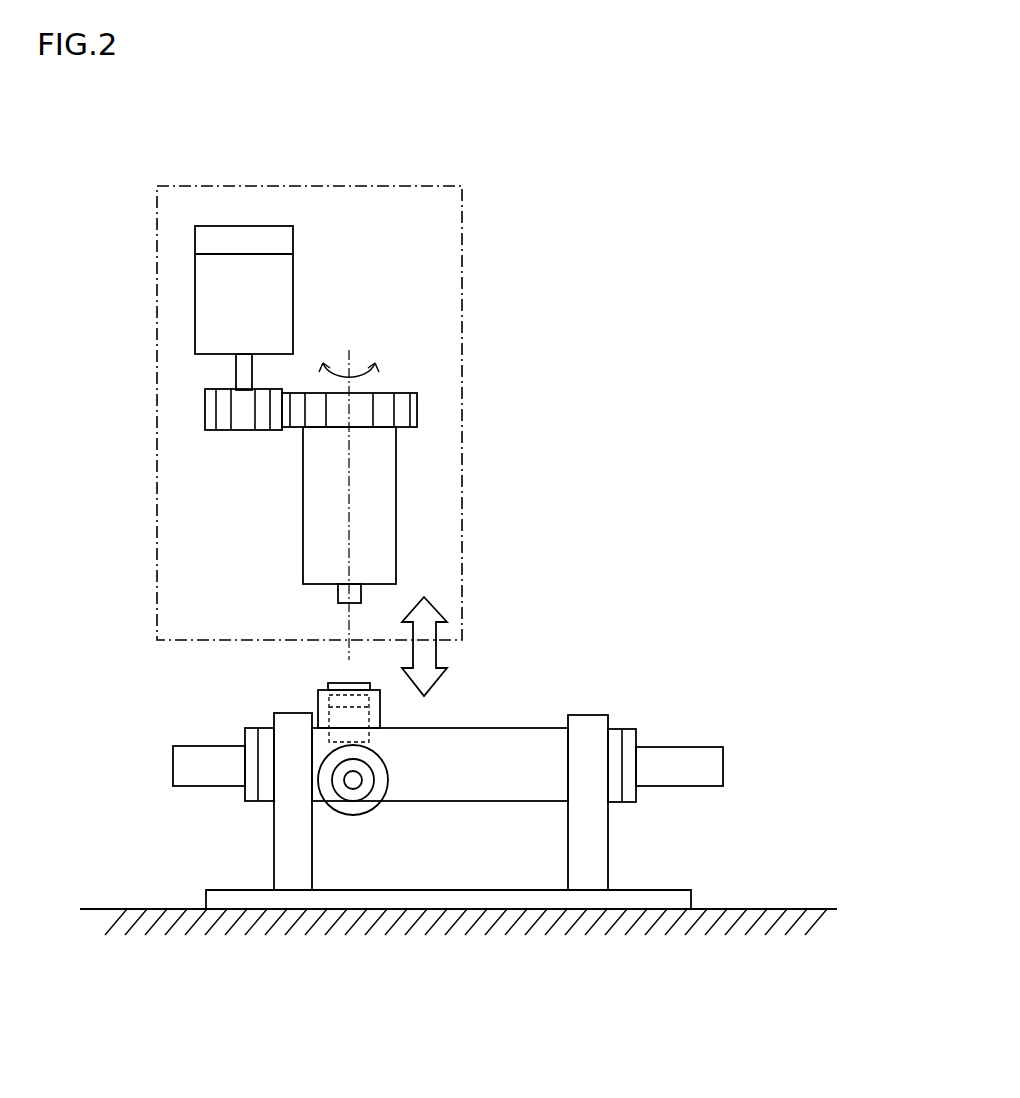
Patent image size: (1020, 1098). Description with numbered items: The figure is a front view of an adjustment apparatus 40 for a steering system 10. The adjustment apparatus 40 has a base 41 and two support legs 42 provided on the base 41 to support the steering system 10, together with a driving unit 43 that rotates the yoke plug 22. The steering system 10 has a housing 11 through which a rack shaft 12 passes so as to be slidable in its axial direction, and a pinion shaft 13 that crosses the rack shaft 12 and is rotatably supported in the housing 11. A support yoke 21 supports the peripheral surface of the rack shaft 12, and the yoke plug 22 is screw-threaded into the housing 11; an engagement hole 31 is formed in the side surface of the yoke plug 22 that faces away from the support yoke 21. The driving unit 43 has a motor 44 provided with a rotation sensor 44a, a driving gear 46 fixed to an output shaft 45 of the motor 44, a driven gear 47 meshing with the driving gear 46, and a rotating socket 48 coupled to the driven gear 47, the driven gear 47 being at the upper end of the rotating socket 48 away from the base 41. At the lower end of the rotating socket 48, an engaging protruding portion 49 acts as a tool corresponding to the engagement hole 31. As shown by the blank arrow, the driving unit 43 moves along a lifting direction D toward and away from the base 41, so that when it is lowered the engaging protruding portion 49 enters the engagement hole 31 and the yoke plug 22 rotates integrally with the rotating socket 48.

The steering system 10 is at (646, 700).
The housing 11 is at (544, 786).
The rack shaft 12 is at (682, 772).
The pinion shaft 13 is at (350, 780).
The support yoke 21 is at (380, 707).
The yoke plug 22 is at (320, 704).
The engagement hole 31 is at (340, 684).
The adjustment apparatus 40 is at (667, 308).
The base 41 is at (206, 900).
The support legs 42 is at (278, 848).
The driving unit 43 is at (462, 206).
The motor 44 is at (294, 290).
The rotation sensor 44a is at (294, 238).
The output shaft 45 is at (236, 372).
The driving gear 46 is at (250, 431).
The driven gear 47 is at (416, 393).
The rotating socket 48 is at (396, 485).
The engaging protruding portion 49 is at (338, 592).
The lifting direction D is at (437, 655).